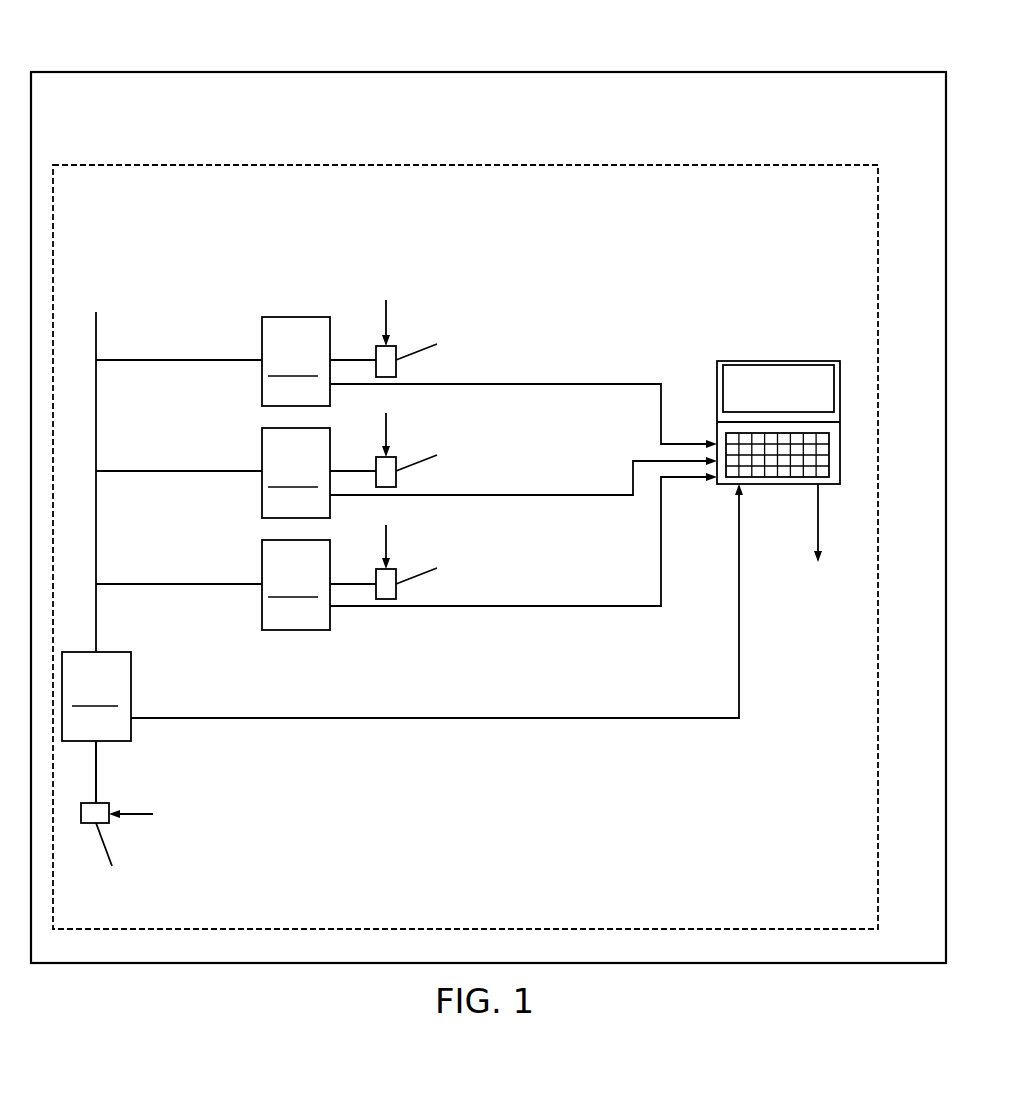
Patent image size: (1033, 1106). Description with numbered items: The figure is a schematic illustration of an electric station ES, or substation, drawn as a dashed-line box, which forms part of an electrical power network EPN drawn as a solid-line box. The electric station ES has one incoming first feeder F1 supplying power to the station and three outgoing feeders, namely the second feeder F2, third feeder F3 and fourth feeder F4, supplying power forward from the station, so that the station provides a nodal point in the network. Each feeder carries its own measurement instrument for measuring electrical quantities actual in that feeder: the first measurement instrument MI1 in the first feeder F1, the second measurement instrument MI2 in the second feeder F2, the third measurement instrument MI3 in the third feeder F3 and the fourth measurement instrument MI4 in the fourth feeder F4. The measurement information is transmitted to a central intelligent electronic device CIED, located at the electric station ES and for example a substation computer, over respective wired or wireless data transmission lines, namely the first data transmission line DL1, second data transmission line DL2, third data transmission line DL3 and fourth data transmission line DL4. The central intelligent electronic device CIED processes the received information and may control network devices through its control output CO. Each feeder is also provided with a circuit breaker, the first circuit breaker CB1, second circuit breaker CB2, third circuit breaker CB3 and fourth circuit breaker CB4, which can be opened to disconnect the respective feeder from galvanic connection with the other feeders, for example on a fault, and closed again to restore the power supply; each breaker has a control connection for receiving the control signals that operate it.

The electrical power network EPN is at (677, 72).
The electric station ES is at (291, 165).
The first feeder F1 is at (97, 760).
The second feeder F2 is at (128, 584).
The third feeder F3 is at (122, 471).
The fourth feeder F4 is at (118, 360).
The first measurement instrument MI1 is at (96, 696).
The second measurement instrument MI2 is at (296, 585).
The third measurement instrument MI3 is at (296, 473).
The fourth measurement instrument MI4 is at (296, 361).
The first circuit breaker CB1 is at (119, 846).
The second circuit breaker CB2 is at (431, 577).
The third circuit breaker CB3 is at (421, 469).
The fourth circuit breaker CB4 is at (412, 343).
The first data transmission line DL1 is at (353, 718).
The second data transmission line DL2 is at (660, 597).
The third data transmission line DL3 is at (635, 461).
The fourth data transmission line DL4 is at (605, 383).
The central intelligent electronic device CIED is at (757, 387).
The control output CO is at (815, 536).